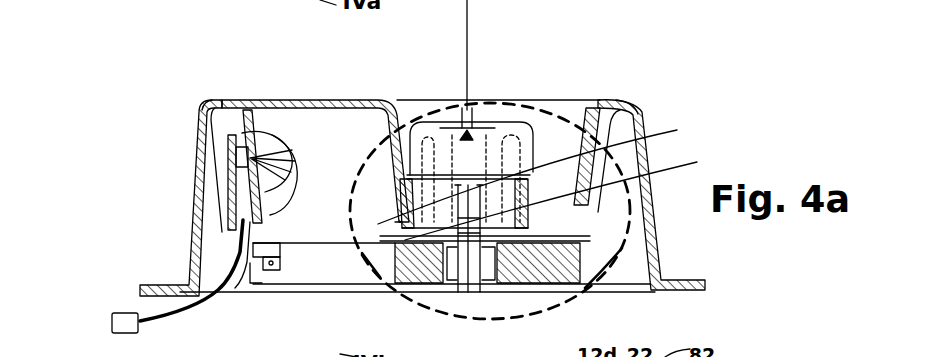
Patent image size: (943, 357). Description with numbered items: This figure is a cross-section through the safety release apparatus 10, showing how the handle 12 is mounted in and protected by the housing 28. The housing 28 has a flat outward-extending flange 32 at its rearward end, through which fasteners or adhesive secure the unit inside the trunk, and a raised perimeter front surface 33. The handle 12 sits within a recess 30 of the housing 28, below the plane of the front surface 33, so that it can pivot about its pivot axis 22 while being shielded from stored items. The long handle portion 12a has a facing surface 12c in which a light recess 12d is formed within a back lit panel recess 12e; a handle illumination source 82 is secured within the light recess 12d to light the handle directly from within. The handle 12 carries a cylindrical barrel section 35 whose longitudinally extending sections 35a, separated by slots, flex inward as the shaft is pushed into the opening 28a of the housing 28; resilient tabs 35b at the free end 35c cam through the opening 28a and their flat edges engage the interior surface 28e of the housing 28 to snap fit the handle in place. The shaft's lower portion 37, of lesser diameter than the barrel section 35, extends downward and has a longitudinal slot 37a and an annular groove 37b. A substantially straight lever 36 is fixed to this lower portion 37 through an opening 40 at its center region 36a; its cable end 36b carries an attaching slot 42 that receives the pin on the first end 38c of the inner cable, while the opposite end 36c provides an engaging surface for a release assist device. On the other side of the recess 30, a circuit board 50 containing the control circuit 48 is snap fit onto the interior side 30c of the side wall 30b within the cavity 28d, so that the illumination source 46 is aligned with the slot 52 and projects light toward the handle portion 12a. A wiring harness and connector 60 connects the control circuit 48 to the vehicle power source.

The safety release apparatus 10 is at (176, 82).
The handle 12 is at (443, 157).
The handle portion 12a is at (492, 105).
The facing surface 12c is at (420, 117).
The light recess 12d is at (460, 97).
The back lit panel recess 12e is at (460, 110).
The pivot axis 22 is at (470, 37).
The housing 28 is at (650, 123).
The opening 28a is at (547, 166).
The cavity 28d is at (230, 297).
The interior surface 28e is at (380, 222).
The recess 30 is at (550, 123).
The side wall 30b is at (320, 112).
The interior side 30c is at (225, 187).
The flange 32 is at (162, 280).
The front surface 33 is at (223, 100).
The barrel section 35 is at (577, 287).
The longitudinally extending sections 35a is at (473, 287).
The tabs 35b is at (561, 192).
The free end 35c is at (395, 240).
The lever 36 is at (341, 272).
The center region 36a is at (543, 277).
The cable end 36b is at (288, 268).
The opposite end 36c is at (587, 260).
The lower portion 37 is at (445, 283).
The slot 37a is at (457, 287).
The annular groove 37b is at (457, 253).
The first end 38c is at (272, 280).
The opening 40 is at (510, 316).
The attaching slot 42 is at (249, 280).
The illumination source 46 is at (238, 142).
The control circuit 48 is at (233, 197).
The circuit board 50 is at (233, 217).
The slot 52 is at (268, 150).
The wiring harness and connector 60 is at (125, 313).
The handle illumination source 82 is at (470, 41).